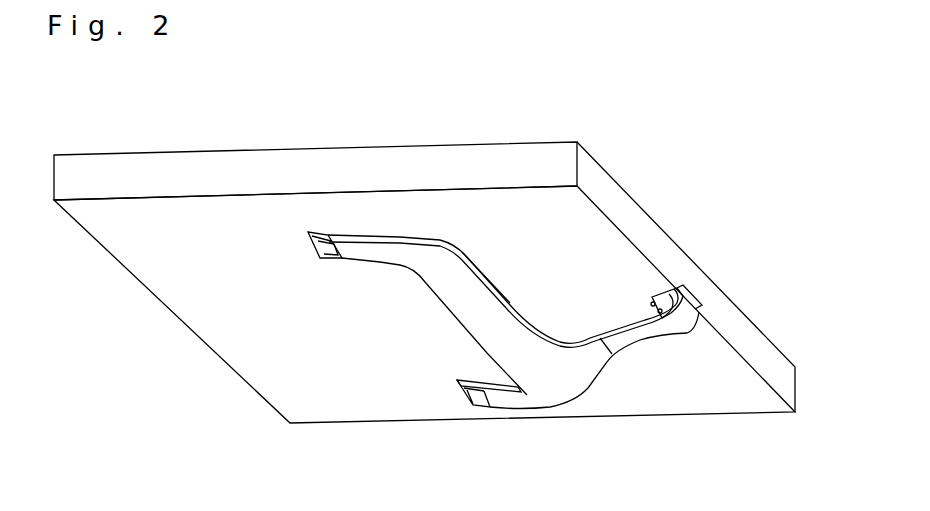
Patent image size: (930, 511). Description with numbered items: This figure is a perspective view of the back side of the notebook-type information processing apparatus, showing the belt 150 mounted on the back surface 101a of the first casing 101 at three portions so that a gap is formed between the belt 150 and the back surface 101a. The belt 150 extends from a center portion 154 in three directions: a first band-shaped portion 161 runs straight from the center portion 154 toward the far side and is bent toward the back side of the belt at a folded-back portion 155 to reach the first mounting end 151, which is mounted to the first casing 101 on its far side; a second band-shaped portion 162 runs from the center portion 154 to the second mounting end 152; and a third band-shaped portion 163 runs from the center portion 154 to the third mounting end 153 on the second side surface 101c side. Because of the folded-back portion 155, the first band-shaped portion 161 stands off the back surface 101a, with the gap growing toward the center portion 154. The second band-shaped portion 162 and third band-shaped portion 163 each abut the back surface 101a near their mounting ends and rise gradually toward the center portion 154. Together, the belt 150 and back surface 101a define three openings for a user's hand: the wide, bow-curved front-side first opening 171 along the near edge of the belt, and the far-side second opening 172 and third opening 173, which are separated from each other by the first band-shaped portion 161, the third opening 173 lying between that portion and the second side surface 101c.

The first casing 101 is at (424, 242).
The back surface of the first casing 101a is at (158, 212).
The second side surface 101c is at (108, 155).
The belt 150 is at (544, 277).
The first mounting end 151 is at (711, 217).
The second mounting end 152 is at (483, 407).
The third mounting end 153 is at (328, 240).
The center portion 154 is at (542, 378).
The folded-back portion 155 is at (683, 312).
The first band-shaped portion 161 is at (612, 348).
The second band-shaped portion 162 is at (512, 398).
The third band-shaped portion 163 is at (473, 287).
The first opening 171 is at (453, 325).
The second opening 172 is at (620, 368).
The third opening 173 is at (523, 305).